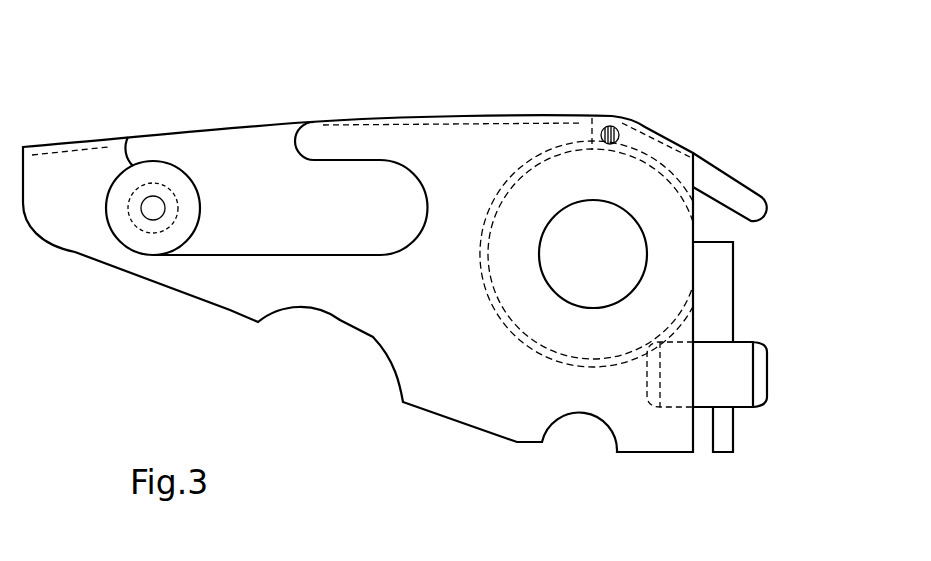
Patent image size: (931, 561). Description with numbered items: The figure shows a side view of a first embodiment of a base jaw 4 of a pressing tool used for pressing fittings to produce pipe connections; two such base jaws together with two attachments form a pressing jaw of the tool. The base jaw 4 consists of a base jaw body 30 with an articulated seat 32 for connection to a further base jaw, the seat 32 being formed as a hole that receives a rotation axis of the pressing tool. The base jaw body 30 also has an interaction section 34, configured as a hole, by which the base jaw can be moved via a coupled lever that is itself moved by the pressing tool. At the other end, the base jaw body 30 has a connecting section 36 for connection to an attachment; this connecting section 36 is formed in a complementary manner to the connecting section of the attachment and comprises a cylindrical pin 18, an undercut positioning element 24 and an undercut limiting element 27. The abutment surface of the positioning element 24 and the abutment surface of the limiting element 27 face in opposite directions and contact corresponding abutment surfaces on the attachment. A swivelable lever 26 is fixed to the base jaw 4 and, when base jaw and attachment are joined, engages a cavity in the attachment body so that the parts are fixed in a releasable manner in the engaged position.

The base jaw 4 is at (197, 75).
The base jaw body 30 is at (445, 143).
The interaction section 34 is at (150, 192).
The articulated seat 32 is at (595, 263).
The connecting section 36 is at (748, 286).
The swivelable lever 26 is at (730, 192).
The positioning element 24 is at (720, 297).
The cylindrical pin 18 is at (740, 377).
The limiting element 27 is at (722, 432).